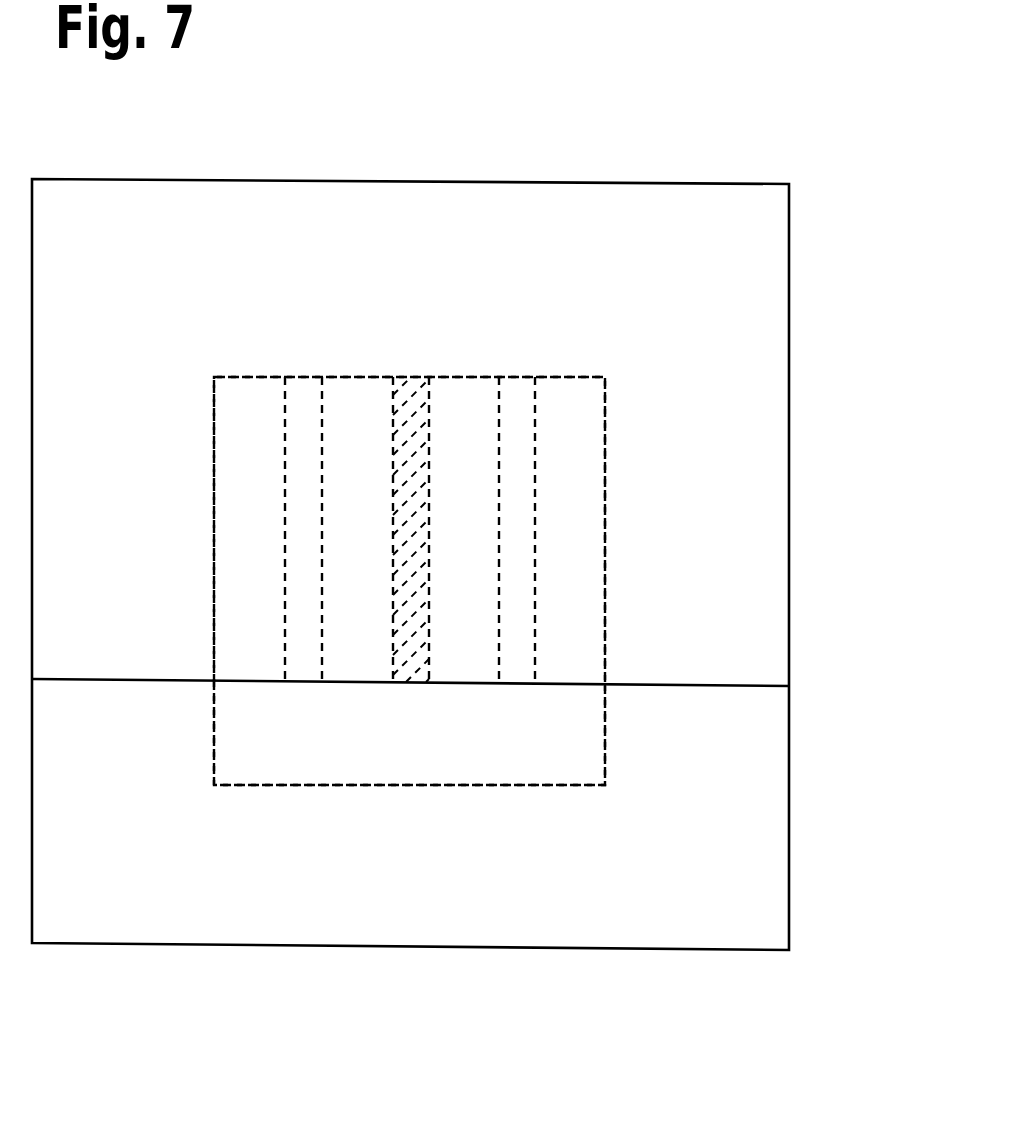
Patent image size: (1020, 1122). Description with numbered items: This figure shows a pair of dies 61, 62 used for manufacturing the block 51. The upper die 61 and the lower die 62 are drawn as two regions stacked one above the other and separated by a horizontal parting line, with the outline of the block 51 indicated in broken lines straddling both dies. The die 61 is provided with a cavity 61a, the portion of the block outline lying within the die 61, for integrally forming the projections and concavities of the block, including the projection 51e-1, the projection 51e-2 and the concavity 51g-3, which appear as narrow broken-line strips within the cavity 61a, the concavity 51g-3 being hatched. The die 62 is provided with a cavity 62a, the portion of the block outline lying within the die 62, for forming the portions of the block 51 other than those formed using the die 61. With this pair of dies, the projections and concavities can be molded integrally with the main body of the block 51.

The die 61 is at (742, 392).
The die 62 is at (742, 770).
The cavity 61a is at (583, 395).
The cavity 62a is at (573, 737).
The block 51 is at (480, 786).
The projection 51e-2 is at (303, 397).
The concavity 51g-3 is at (405, 395).
The projection 51e-1 is at (520, 400).